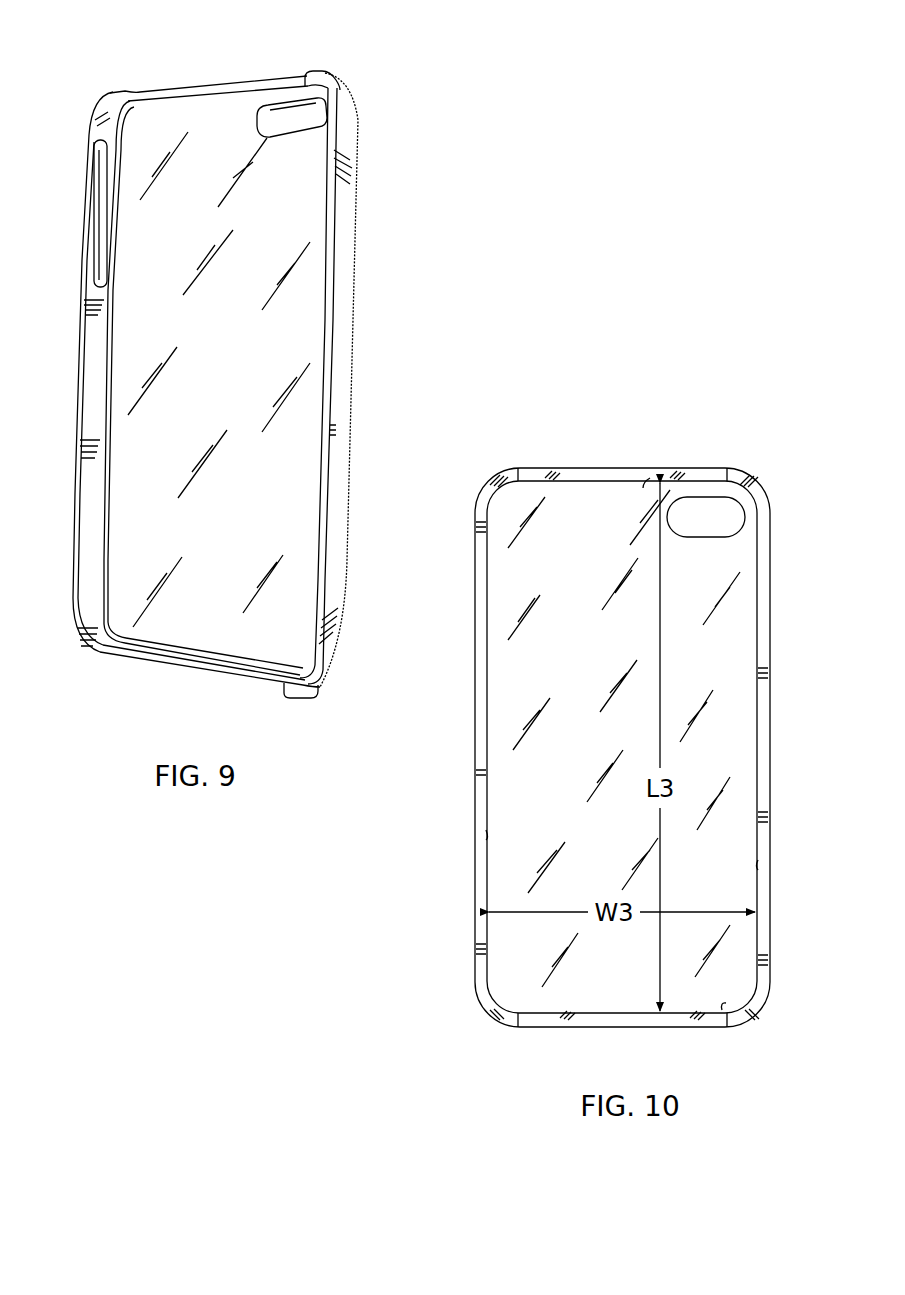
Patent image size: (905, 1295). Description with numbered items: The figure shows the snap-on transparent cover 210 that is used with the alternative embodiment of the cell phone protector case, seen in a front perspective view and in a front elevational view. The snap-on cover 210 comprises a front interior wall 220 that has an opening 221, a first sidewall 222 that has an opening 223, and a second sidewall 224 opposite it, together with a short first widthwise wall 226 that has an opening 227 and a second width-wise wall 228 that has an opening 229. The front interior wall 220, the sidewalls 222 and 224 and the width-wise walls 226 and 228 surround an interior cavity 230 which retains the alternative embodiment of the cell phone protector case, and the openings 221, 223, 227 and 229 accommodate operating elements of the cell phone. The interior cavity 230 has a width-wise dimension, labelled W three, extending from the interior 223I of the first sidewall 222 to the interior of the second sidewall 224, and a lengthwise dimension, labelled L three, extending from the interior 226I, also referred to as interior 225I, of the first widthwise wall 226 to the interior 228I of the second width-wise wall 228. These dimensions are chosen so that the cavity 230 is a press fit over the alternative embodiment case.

In FIG. 9, the snap-on cover 210 is at (408, 168).
In FIG. 10, the snap-on cover 210 is at (415, 851).
In FIG. 9, the front interior wall 220 is at (157, 137).
In FIG. 10, the front interior wall 220 is at (570, 510).
In FIG. 9, the opening 221 is at (283, 120).
In FIG. 10, the opening 221 is at (696, 506).
In FIG. 9, the first sidewall 222 is at (77, 362).
In FIG. 10, the first sidewall 222 is at (479, 755).
In FIG. 9, the opening 223 is at (98, 218).
In FIG. 10, the interior of first sidewall 223I is at (488, 838).
In FIG. 9, the second sidewall 224 is at (350, 290).
In FIG. 10, the second sidewall 224 is at (763, 764).
In FIG. 10, the interior of first width-wise wall 225I is at (754, 868).
In FIG. 9, the first widthwise wall 226 is at (317, 72).
In FIG. 10, the first widthwise wall 226 is at (747, 480).
In FIG. 10, the interior of first widthwise wall 226I is at (650, 480).
In FIG. 9, the opening 227 is at (223, 86).
In FIG. 10, the opening 227 is at (620, 474).
In FIG. 9, the second width-wise wall 228 is at (300, 694).
In FIG. 10, the second width-wise wall 228 is at (743, 1026).
In FIG. 10, the interior of second width-wise wall 228I is at (724, 1010).
In FIG. 9, the opening 229 is at (193, 660).
In FIG. 10, the opening 229 is at (541, 1026).
In FIG. 9, the interior cavity 230 is at (166, 398).
In FIG. 10, the interior cavity 230 is at (569, 758).